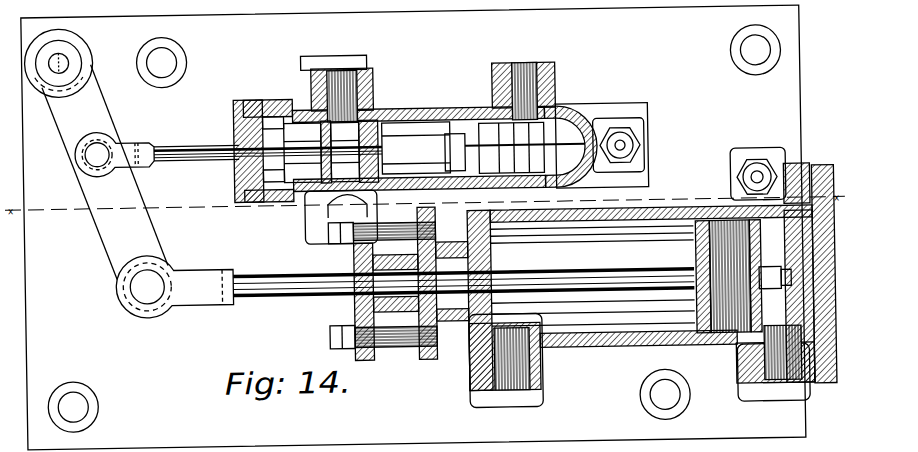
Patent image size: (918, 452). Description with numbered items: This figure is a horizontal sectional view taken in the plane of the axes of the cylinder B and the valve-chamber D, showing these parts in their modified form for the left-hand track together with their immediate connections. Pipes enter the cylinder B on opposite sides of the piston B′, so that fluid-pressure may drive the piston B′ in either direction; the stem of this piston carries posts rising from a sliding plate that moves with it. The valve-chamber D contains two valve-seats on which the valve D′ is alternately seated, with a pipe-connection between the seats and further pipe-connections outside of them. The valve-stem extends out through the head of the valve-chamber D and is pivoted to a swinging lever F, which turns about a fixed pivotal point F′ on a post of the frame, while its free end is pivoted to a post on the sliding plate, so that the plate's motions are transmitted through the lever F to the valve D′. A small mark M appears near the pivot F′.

The fixed pivotal point F′ is at (58, 63).
The crank pin M is at (58, 58).
The swinging lever F is at (105, 172).
The valve D′ is at (441, 127).
The valve-chamber D is at (416, 148).
The piston B′ is at (754, 176).
The cylinder B is at (570, 288).